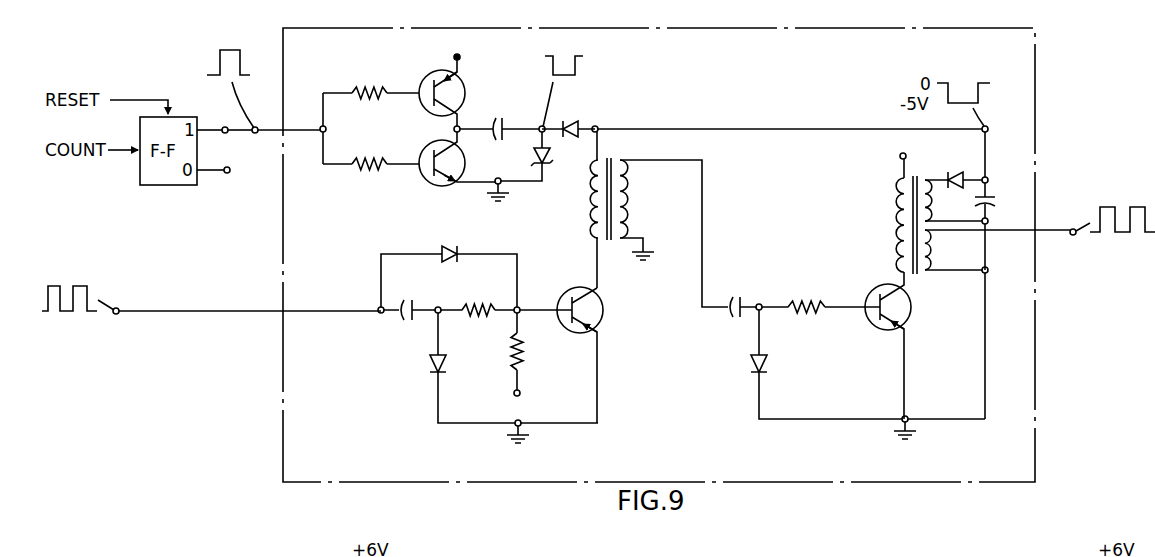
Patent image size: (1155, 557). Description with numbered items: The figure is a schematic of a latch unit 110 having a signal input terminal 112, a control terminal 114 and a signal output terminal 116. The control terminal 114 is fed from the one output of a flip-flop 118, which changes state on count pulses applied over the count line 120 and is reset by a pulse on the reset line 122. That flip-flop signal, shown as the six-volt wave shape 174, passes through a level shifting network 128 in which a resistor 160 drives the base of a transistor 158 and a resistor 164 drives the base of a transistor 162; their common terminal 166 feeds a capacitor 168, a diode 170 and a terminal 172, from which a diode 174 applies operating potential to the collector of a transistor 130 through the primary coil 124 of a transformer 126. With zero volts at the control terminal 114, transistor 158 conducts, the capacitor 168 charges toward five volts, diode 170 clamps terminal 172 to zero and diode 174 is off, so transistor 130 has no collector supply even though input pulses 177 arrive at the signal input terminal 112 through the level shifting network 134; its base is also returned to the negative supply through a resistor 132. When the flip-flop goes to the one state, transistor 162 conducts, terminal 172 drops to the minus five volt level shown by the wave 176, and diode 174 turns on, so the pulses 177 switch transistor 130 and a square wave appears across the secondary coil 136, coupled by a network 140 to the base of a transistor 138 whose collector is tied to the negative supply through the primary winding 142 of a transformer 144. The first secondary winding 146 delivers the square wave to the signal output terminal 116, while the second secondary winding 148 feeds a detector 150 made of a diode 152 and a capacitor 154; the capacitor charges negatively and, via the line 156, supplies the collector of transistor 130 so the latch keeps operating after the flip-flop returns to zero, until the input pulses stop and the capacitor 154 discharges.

The latch unit 110 is at (283, 393).
The signal input terminal 112 is at (118, 309).
The control terminal 114 is at (256, 134).
The signal output terminal 116 is at (1073, 236).
The flip-flop 118 is at (175, 186).
The count line 120 is at (128, 149).
The reset line 122 is at (136, 99).
The primary coil 124 is at (592, 206).
The transformer 126 is at (660, 155).
The level shifting network 128 is at (377, 196).
The transistor 130 is at (571, 293).
The resistor 132 is at (524, 352).
The level shifting network 134 is at (469, 293).
The secondary coil 136 is at (625, 206).
The transistor 138 is at (878, 293).
The network 140 is at (784, 296).
The primary winding 142 is at (899, 198).
The transformer 144 is at (956, 311).
The first secondary winding 146 is at (926, 273).
The second secondary winding 148 is at (924, 181).
The detector 150 is at (969, 213).
The diode 152 is at (956, 173).
The capacitor 154 is at (995, 199).
The line 156 is at (835, 128).
The transistor 158 is at (422, 80).
The resistor 160 is at (366, 88).
The transistor 162 is at (456, 184).
The resistor 164 is at (372, 158).
The terminal 166 is at (454, 134).
The capacitor 168 is at (492, 120).
The diode 170 is at (536, 156).
The terminal 172 is at (540, 128).
The diode 174 is at (240, 68).
The wave 176 is at (583, 62).
The input pulses signal 177 is at (68, 314).